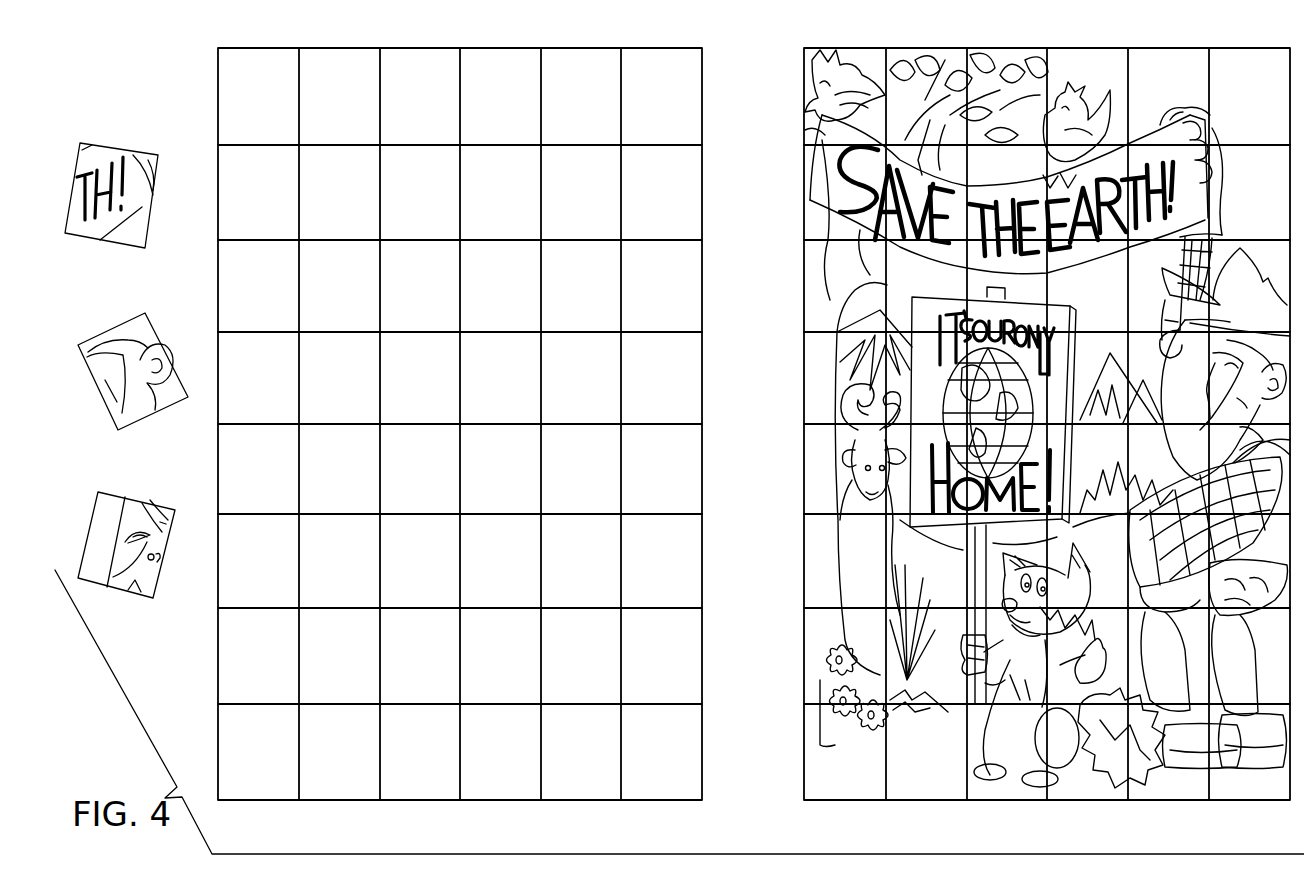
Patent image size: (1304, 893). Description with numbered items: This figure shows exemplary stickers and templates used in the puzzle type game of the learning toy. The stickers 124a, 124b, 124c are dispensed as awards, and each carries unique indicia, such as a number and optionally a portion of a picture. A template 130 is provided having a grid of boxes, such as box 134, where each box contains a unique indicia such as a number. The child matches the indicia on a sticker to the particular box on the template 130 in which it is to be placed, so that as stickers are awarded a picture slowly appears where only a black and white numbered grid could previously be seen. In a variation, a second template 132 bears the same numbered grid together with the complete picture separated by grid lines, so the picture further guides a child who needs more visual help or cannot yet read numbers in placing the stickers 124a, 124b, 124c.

The sticker 124a is at (132, 152).
The sticker 124b is at (110, 330).
The sticker 124c is at (158, 503).
The template 130 is at (604, 803).
The numbered picture grid sheet 132 is at (995, 802).
The box 134 is at (686, 484).